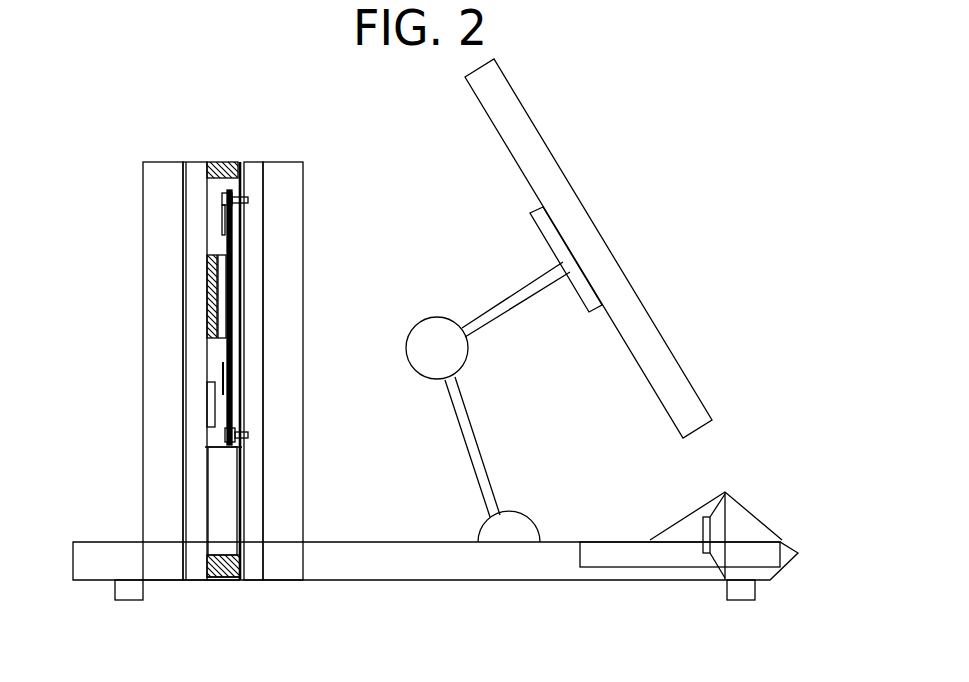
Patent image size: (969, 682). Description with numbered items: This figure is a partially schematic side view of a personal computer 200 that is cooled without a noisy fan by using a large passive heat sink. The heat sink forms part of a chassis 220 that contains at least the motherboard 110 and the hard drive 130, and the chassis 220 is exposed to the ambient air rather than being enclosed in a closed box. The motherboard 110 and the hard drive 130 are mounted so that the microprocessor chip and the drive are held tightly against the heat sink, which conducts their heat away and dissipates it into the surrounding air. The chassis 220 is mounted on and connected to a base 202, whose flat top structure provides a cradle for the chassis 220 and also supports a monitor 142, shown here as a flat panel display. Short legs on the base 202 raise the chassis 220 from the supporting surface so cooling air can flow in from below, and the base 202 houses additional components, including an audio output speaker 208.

The computer 200 is at (172, 52).
The chassis 220 is at (197, 162).
The motherboard 110 is at (223, 228).
The hard drive 130 is at (223, 497).
The base 202 is at (568, 582).
The audio output speaker 208 is at (730, 523).
The monitor 142 is at (598, 222).